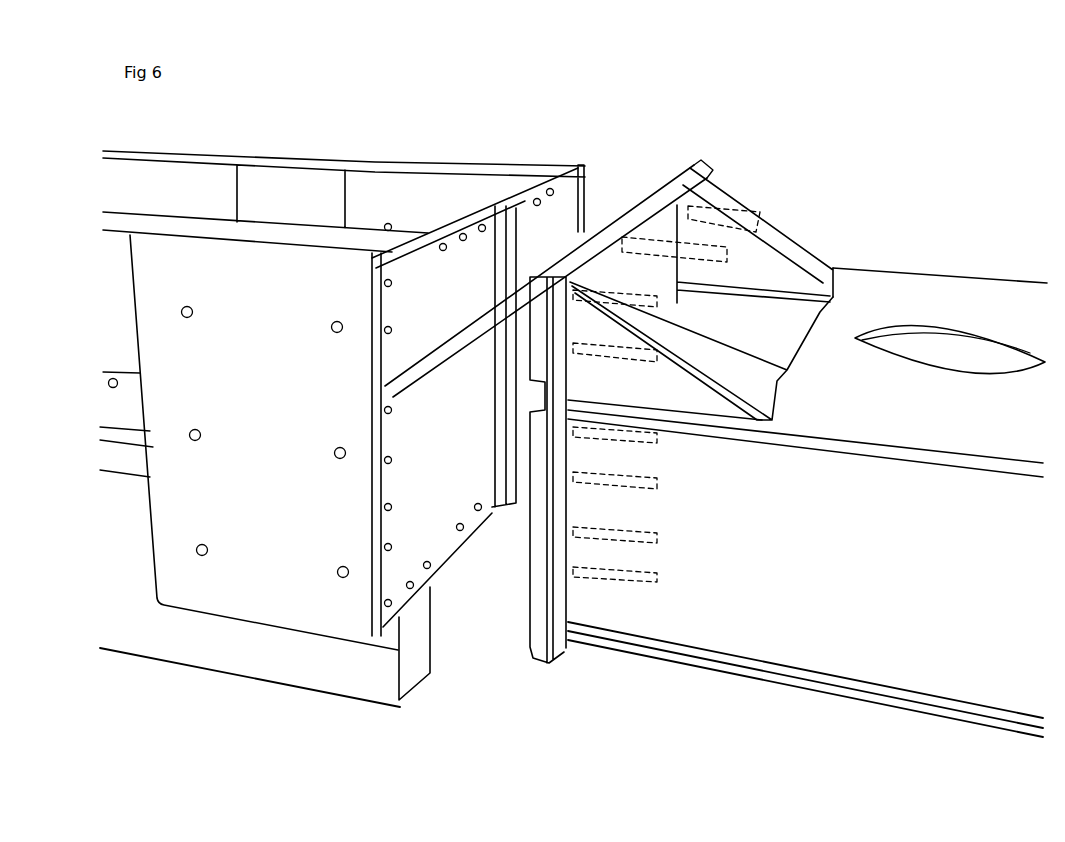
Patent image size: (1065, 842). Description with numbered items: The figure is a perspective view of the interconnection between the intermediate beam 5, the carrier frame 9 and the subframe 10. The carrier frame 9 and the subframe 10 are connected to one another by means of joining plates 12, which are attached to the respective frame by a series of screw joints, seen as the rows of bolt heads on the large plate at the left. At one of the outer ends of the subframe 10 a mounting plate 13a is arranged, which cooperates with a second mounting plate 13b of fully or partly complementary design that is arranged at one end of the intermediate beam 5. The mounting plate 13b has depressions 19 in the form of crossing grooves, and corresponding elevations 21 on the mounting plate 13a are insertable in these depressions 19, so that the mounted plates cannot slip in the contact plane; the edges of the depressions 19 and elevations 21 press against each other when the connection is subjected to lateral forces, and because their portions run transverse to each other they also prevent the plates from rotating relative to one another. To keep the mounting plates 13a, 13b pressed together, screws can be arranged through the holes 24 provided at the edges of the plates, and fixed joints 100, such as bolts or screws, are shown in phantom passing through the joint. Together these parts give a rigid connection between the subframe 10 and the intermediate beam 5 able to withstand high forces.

The intermediate beam 5 is at (900, 297).
The carrier frame 9 is at (257, 658).
The subframe 10 is at (265, 178).
The joining plates 12 is at (167, 483).
The mounting plate 13a is at (428, 514).
The second mounting plate 13b is at (528, 650).
The depressions 19 is at (643, 197).
The elevations 21 is at (513, 200).
The holes 24 is at (386, 288).
The fixed joints 100 is at (655, 531).